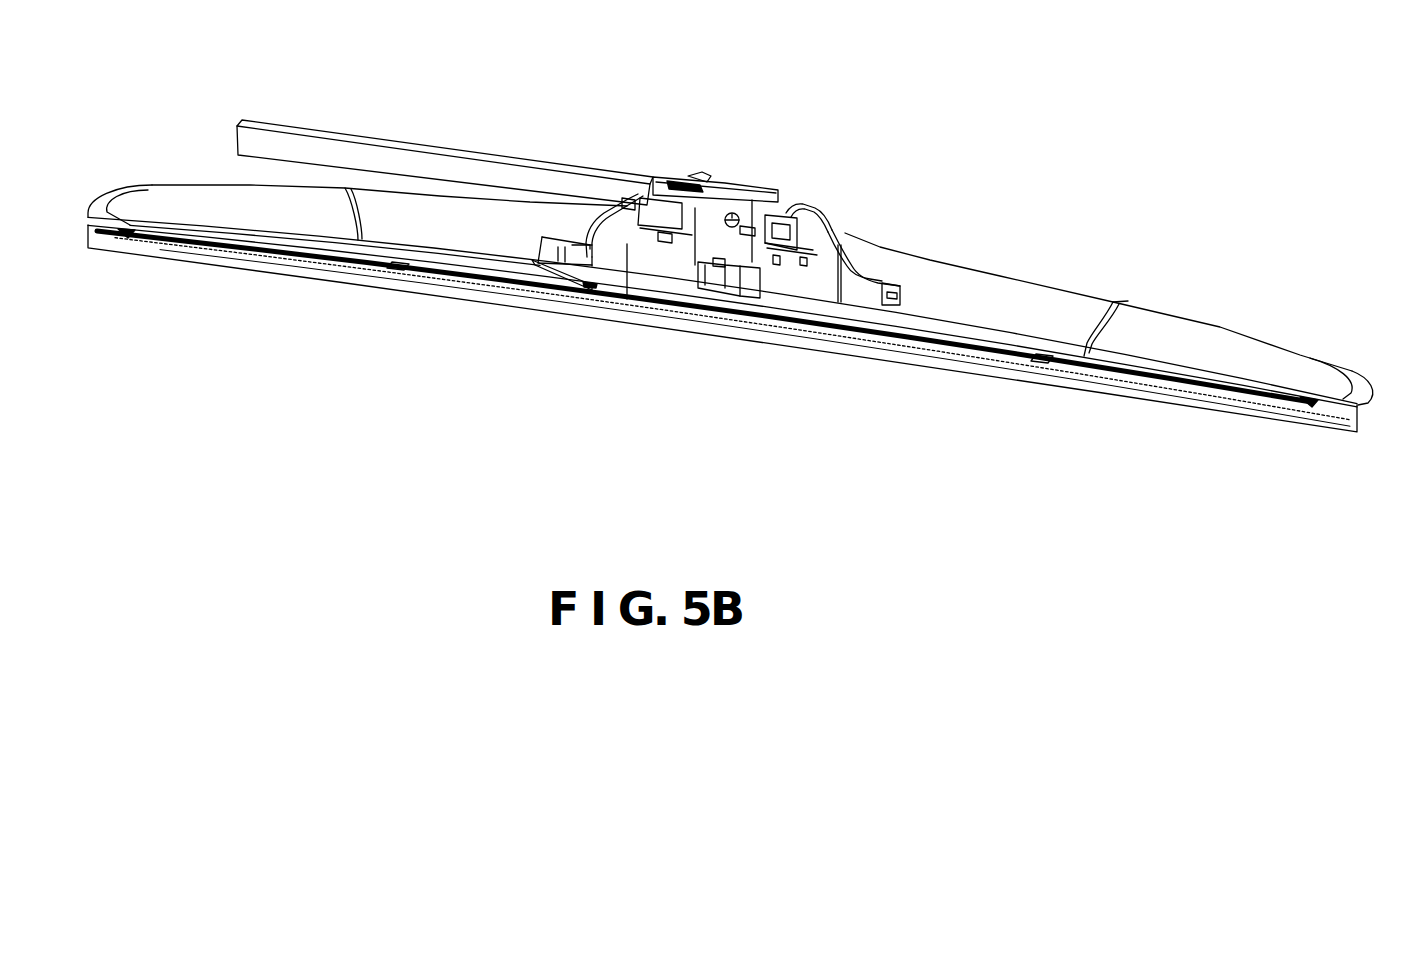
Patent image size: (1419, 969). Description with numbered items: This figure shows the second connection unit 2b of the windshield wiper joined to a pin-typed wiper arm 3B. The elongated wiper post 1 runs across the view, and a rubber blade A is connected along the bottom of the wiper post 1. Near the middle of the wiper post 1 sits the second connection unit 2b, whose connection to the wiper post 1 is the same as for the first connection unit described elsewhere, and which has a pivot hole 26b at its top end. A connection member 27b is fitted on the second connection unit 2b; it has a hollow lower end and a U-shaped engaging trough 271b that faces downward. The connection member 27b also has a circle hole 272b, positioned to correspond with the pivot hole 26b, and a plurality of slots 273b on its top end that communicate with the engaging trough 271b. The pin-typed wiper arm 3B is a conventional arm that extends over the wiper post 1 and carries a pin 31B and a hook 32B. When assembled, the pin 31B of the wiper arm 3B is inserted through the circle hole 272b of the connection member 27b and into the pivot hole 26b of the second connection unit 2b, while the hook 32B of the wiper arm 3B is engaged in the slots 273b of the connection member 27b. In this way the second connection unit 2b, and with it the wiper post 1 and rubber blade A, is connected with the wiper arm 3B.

The wiper post 1 is at (1163, 331).
The pin-typed wiper arm 3B is at (384, 158).
The second connection unit 2b is at (667, 262).
The connection member 27b is at (823, 207).
The U-shaped engaging trough 271b is at (843, 207).
The circle hole 272b is at (736, 228).
The pivot hole 26b is at (781, 321).
The slots 273b is at (655, 173).
The pin 31B is at (733, 207).
The hook 32B is at (695, 183).
The rubber blade A is at (1177, 393).